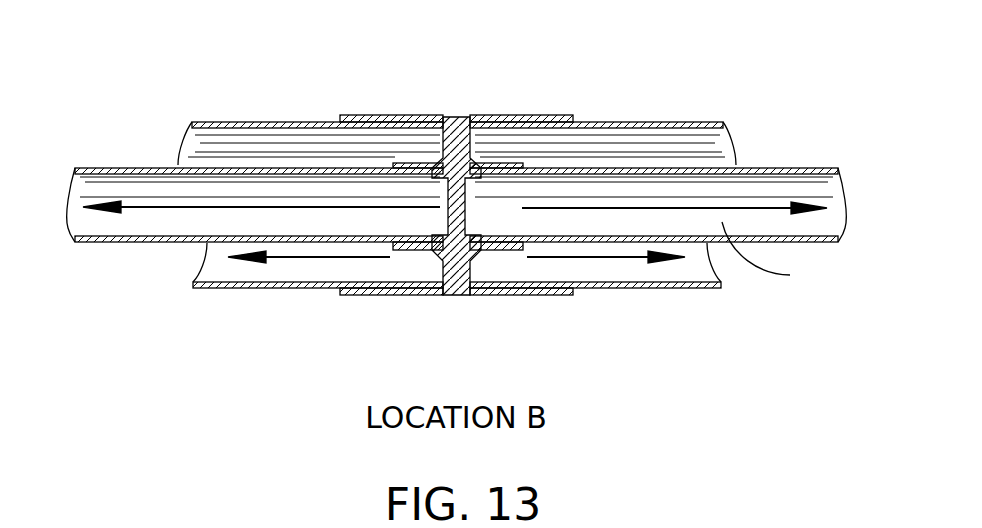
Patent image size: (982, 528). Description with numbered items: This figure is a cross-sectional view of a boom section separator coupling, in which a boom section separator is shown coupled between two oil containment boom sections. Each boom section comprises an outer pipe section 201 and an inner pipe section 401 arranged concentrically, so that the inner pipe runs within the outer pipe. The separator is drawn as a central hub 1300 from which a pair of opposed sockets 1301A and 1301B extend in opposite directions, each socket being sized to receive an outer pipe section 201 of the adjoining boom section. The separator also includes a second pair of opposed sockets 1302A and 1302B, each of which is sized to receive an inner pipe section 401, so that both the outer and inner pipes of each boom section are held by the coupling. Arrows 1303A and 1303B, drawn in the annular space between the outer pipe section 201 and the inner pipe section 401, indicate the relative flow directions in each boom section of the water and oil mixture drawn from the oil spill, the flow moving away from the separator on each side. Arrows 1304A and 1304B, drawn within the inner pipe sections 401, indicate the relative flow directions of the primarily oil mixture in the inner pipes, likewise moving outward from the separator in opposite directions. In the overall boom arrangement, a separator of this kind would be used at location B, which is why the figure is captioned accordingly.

The connector hub 1300 is at (457, 116).
The opposed socket 1301A is at (393, 117).
The opposed socket 1301B is at (522, 117).
The opposed socket 1302A is at (413, 250).
The opposed socket 1302B is at (502, 250).
The arrow 1303A is at (333, 262).
The arrow 1303B is at (580, 260).
The arrow 1304A is at (175, 205).
The arrow 1304B is at (738, 207).
The inner pipe section 401 is at (190, 217).
The outer pipe section 201 is at (310, 270).